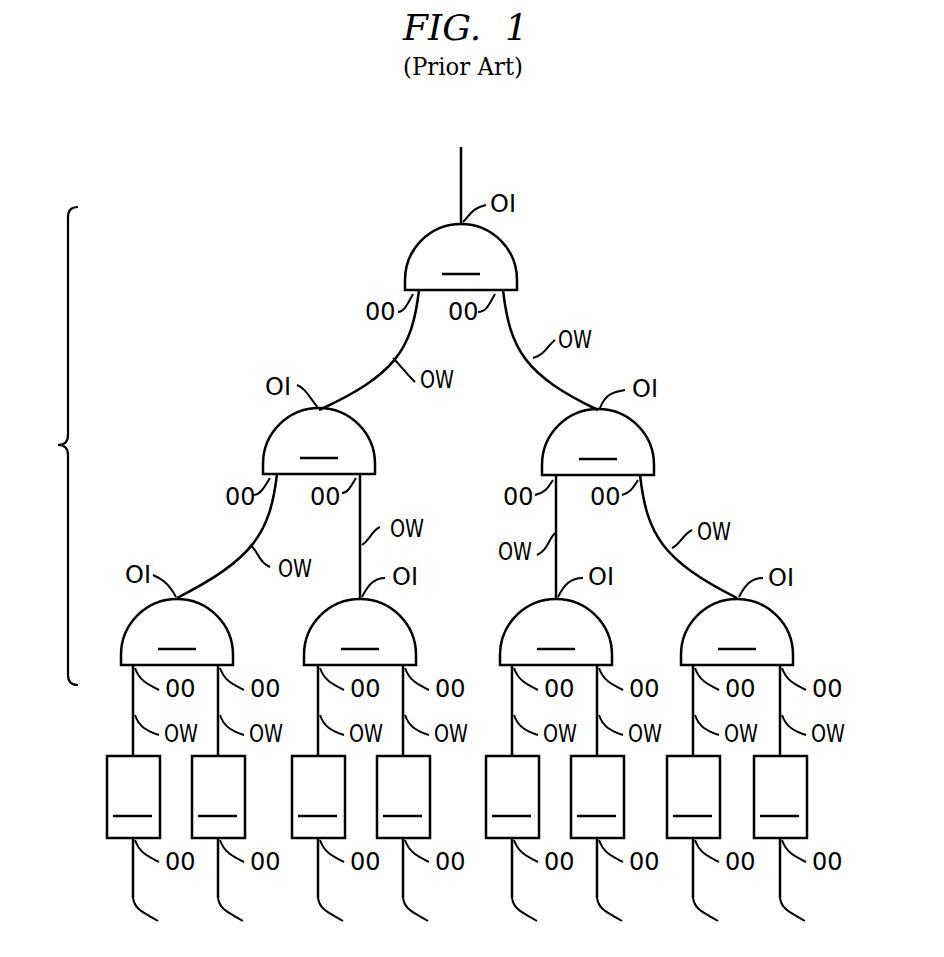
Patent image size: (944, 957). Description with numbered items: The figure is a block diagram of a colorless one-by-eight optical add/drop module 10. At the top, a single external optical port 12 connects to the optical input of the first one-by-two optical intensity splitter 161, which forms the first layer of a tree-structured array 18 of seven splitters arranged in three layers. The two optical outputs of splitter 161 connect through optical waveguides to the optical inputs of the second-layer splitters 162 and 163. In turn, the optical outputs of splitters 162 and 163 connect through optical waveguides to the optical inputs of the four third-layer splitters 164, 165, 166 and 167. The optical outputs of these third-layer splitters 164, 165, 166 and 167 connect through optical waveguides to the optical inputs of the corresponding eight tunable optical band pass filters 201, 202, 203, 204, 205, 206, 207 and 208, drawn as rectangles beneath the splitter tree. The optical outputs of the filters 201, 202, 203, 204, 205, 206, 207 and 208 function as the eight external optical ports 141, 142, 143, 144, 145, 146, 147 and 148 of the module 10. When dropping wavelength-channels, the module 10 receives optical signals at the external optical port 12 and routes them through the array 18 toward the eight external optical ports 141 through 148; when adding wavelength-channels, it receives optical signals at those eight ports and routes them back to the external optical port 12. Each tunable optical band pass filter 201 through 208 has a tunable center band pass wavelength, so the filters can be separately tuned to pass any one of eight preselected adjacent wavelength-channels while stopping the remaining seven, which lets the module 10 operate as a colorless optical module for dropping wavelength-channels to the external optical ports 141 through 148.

The optical add/drop module 10 is at (743, 281).
The external optical port 12 is at (463, 166).
The external optical port 141 is at (171, 889).
The external optical port 142 is at (256, 889).
The external optical port 143 is at (356, 889).
The external optical port 144 is at (441, 889).
The external optical port 145 is at (550, 889).
The external optical port 146 is at (635, 889).
The external optical port 147 is at (731, 889).
The external optical port 148 is at (818, 889).
The 1×2 optical intensity splitter 161 is at (458, 317).
The 1×2 optical intensity splitter 162 is at (276, 503).
The 1×2 optical intensity splitter 163 is at (639, 503).
The 1×2 optical intensity splitter 164 is at (177, 632).
The 1×2 optical intensity splitter 165 is at (360, 632).
The 1×2 optical intensity splitter 166 is at (556, 632).
The 1×2 optical intensity splitter 167 is at (737, 632).
The array 18 is at (46, 446).
The tunable optical band pass filter 201 is at (133, 751).
The tunable optical band pass filter 202 is at (218, 751).
The tunable optical band pass filter 203 is at (318, 751).
The tunable optical band pass filter 204 is at (403, 751).
The tunable optical band pass filter 205 is at (512, 751).
The tunable optical band pass filter 206 is at (597, 751).
The tunable optical band pass filter 207 is at (693, 751).
The tunable optical band pass filter 208 is at (780, 751).